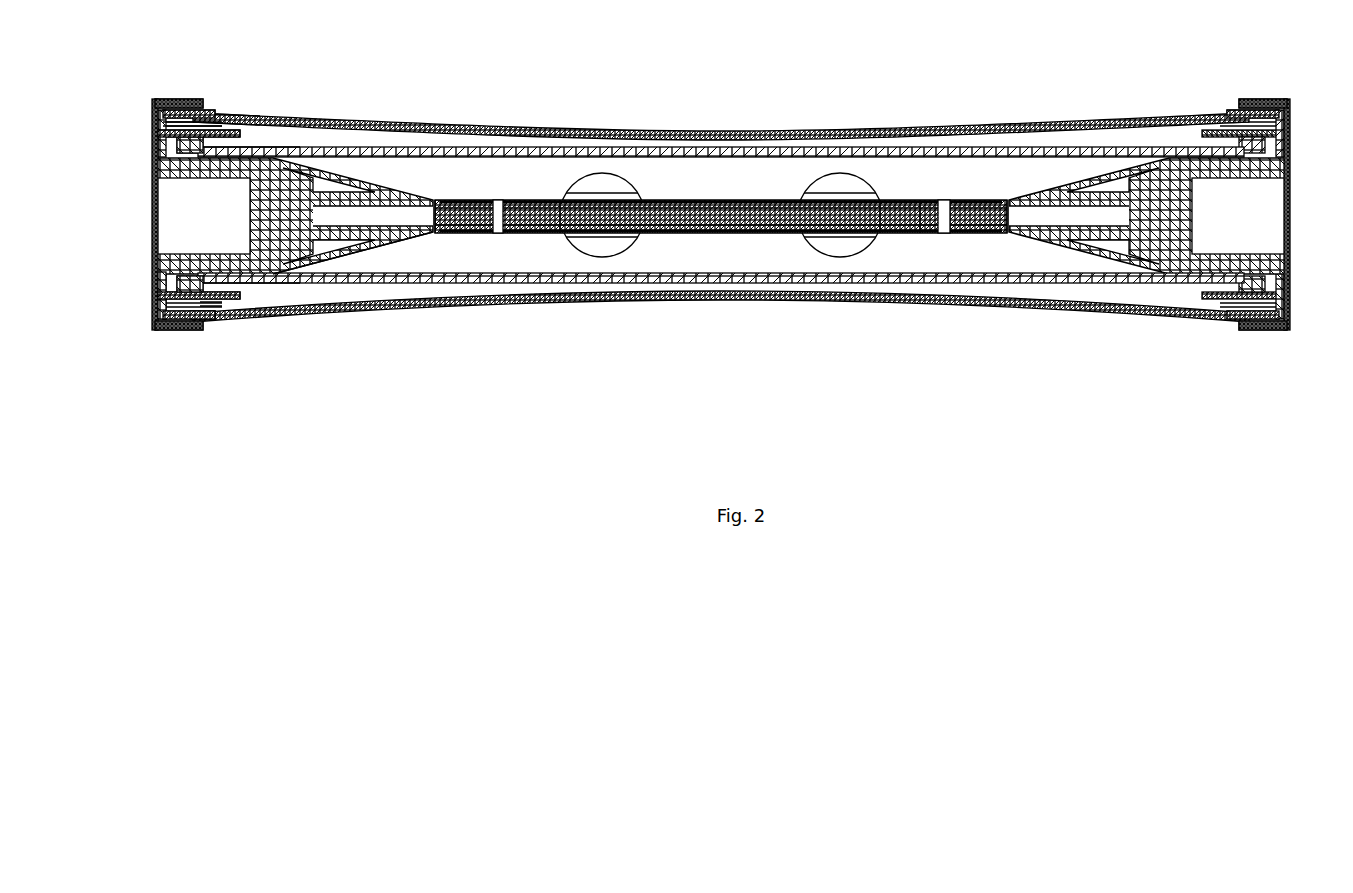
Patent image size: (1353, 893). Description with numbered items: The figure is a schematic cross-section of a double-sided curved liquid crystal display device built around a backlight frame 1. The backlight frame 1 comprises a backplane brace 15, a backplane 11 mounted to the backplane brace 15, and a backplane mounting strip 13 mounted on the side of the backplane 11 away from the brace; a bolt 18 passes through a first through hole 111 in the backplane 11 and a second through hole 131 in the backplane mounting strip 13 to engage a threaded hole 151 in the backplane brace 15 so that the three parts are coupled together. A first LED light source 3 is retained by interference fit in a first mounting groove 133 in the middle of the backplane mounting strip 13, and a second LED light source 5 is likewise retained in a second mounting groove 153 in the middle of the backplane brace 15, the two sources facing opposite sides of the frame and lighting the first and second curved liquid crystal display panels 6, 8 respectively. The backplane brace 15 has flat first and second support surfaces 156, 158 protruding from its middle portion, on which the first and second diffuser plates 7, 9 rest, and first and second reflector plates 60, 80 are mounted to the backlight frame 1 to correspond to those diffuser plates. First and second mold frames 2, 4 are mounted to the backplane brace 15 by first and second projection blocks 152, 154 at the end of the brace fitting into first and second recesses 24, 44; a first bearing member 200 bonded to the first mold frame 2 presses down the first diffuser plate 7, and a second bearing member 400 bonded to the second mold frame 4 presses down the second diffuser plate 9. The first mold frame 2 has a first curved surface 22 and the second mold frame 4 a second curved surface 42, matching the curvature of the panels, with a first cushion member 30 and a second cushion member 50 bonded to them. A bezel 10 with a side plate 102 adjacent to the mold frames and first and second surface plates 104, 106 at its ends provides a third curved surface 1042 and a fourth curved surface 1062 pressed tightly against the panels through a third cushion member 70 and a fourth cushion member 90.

The backlight frame 1 is at (1050, 398).
The first mold frame 2 is at (247, 118).
The first LED light source 3 is at (712, 233).
The second mold frame 4 is at (230, 306).
The second LED light source 5 is at (762, 234).
The first curved liquid crystal display panel 6 is at (656, 136).
The first diffuser plate 7 is at (757, 153).
The second curved liquid crystal display panel 8 is at (617, 303).
The second diffuser plate 9 is at (566, 285).
The bezel 10 is at (1294, 103).
The backplane 11 is at (1000, 235).
The backplane mounting strip 13 is at (957, 235).
The backplane brace 15 is at (1030, 235).
The bolt 18 is at (498, 200).
The first curved surface 22 is at (208, 120).
The first recess 24 is at (154, 120).
The first cushion member 30 is at (188, 104).
The second curved surface 42 is at (226, 312).
The second recess 44 is at (165, 293).
The second cushion member 50 is at (205, 318).
The first reflector plate 60 is at (893, 200).
The third cushion member 70 is at (185, 110).
The second reflector plate 80 is at (310, 256).
The fourth cushion member 90 is at (174, 328).
The side plate 102 is at (1290, 192).
The first surface plate 104 is at (1262, 106).
The second surface plate 106 is at (1275, 328).
The first through hole 111 is at (418, 262).
The second through hole 131 is at (529, 237).
The first mounting groove 133 is at (923, 237).
The threaded hole 151 is at (483, 234).
The first projection block 152 is at (178, 144).
The second mounting groove 153 is at (900, 236).
The second projection block 154 is at (160, 270).
The first support surface 156 is at (268, 143).
The second support surface 158 is at (246, 282).
The first bearing member 200 is at (165, 152).
The second bearing member 400 is at (160, 318).
The third curved surface 1042 is at (1243, 104).
The fourth curved surface 1062 is at (1240, 324).